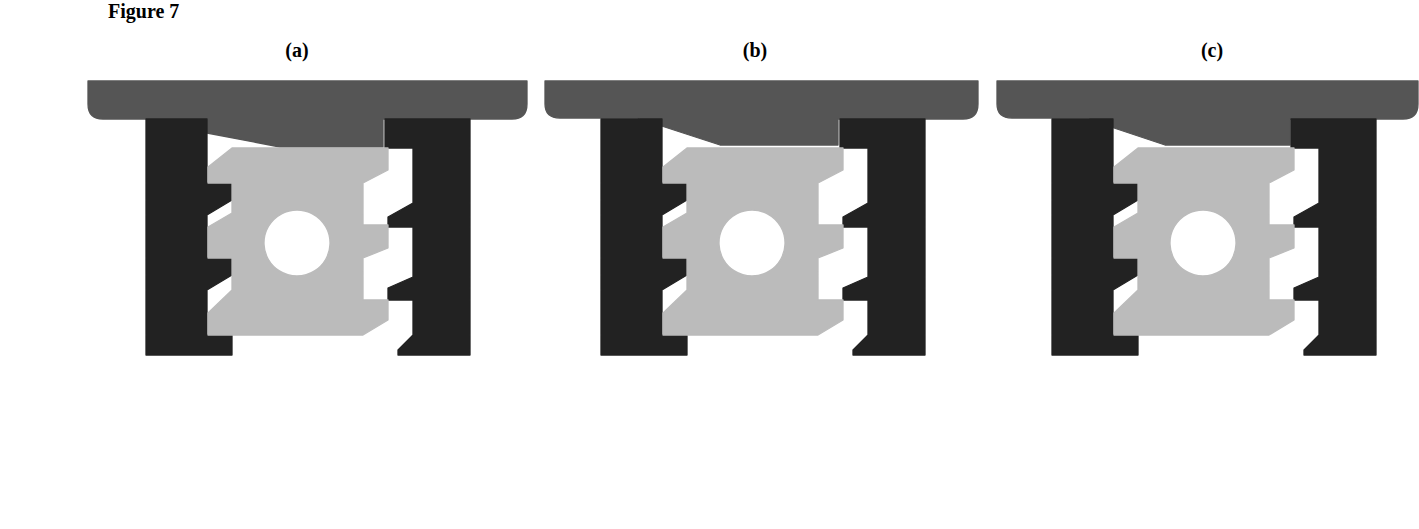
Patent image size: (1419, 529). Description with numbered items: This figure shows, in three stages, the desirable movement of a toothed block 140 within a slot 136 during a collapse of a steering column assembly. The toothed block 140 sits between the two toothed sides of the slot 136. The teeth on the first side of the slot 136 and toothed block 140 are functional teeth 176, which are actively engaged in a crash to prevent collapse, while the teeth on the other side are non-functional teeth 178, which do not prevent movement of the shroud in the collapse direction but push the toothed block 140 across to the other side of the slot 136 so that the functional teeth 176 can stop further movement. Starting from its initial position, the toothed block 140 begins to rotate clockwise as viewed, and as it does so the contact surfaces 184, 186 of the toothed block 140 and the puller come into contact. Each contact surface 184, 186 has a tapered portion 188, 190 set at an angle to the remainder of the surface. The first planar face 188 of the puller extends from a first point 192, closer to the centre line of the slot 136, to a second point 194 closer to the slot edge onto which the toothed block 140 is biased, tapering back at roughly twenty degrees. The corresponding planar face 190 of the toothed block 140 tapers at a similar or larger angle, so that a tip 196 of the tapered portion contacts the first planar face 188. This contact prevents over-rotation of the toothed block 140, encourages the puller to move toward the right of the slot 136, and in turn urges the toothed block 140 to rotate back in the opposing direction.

The slot 136 is at (241, 357).
The toothed block 140 is at (337, 282).
The functional teeth 176 is at (204, 134).
The non-functional teeth 178 is at (396, 134).
The contact surface 184 is at (818, 142).
The contact surface 186 is at (794, 143).
The first planar face 188 is at (667, 136).
The corresponding planar face 190 is at (713, 141).
The first point 192 is at (738, 150).
The second point 194 is at (650, 127).
The tip of the tapered portion 196 is at (692, 139).